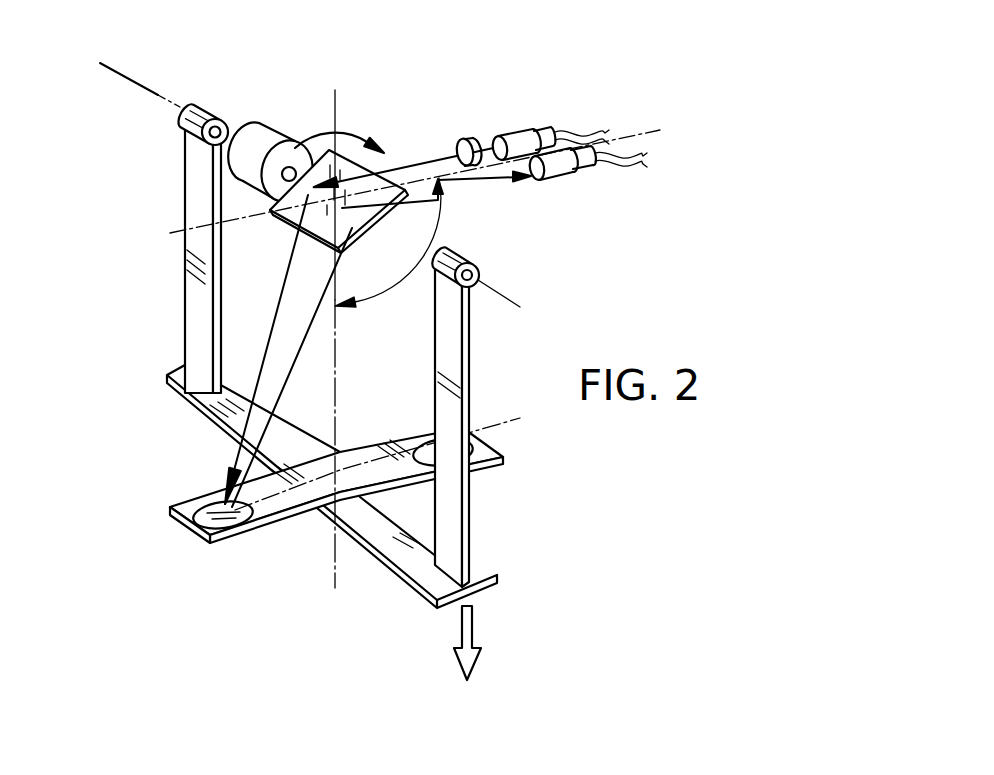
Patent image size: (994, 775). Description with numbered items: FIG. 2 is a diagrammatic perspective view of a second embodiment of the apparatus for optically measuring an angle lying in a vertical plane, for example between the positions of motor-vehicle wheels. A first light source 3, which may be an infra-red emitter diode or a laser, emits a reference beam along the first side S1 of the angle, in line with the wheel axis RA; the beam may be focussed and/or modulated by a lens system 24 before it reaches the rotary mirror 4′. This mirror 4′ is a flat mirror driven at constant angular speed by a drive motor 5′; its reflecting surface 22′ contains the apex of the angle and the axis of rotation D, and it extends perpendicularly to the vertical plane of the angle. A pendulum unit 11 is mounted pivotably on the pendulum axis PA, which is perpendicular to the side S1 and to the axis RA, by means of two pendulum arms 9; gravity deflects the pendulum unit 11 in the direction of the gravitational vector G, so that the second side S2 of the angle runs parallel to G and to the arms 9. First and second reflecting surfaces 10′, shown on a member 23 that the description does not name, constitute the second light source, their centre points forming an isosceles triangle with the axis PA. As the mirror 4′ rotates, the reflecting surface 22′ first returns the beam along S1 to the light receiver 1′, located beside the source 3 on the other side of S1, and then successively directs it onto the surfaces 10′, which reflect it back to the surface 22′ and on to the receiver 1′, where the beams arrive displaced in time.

The pendulum unit axis PA is at (141, 80).
The drive motor 5′ is at (265, 127).
The rotary mirror 4′ is at (326, 148).
The first side of the angle S1 is at (407, 181).
The lens system 24 is at (464, 138).
The first light beam source 3 is at (512, 135).
The wheel axis RA is at (620, 130).
The reflecting surface of the rotary mirror 22′ is at (390, 207).
The light receiver 1′ is at (562, 174).
The pendulum arm 9 is at (197, 193).
The axis of rotation D is at (310, 190).
The second side of the angle S2 is at (337, 356).
The first and second reflecting surfaces 10′ is at (205, 501).
The test plate 23 is at (318, 512).
The pendulum unit 11 is at (478, 567).
The gravitational vector G is at (476, 643).